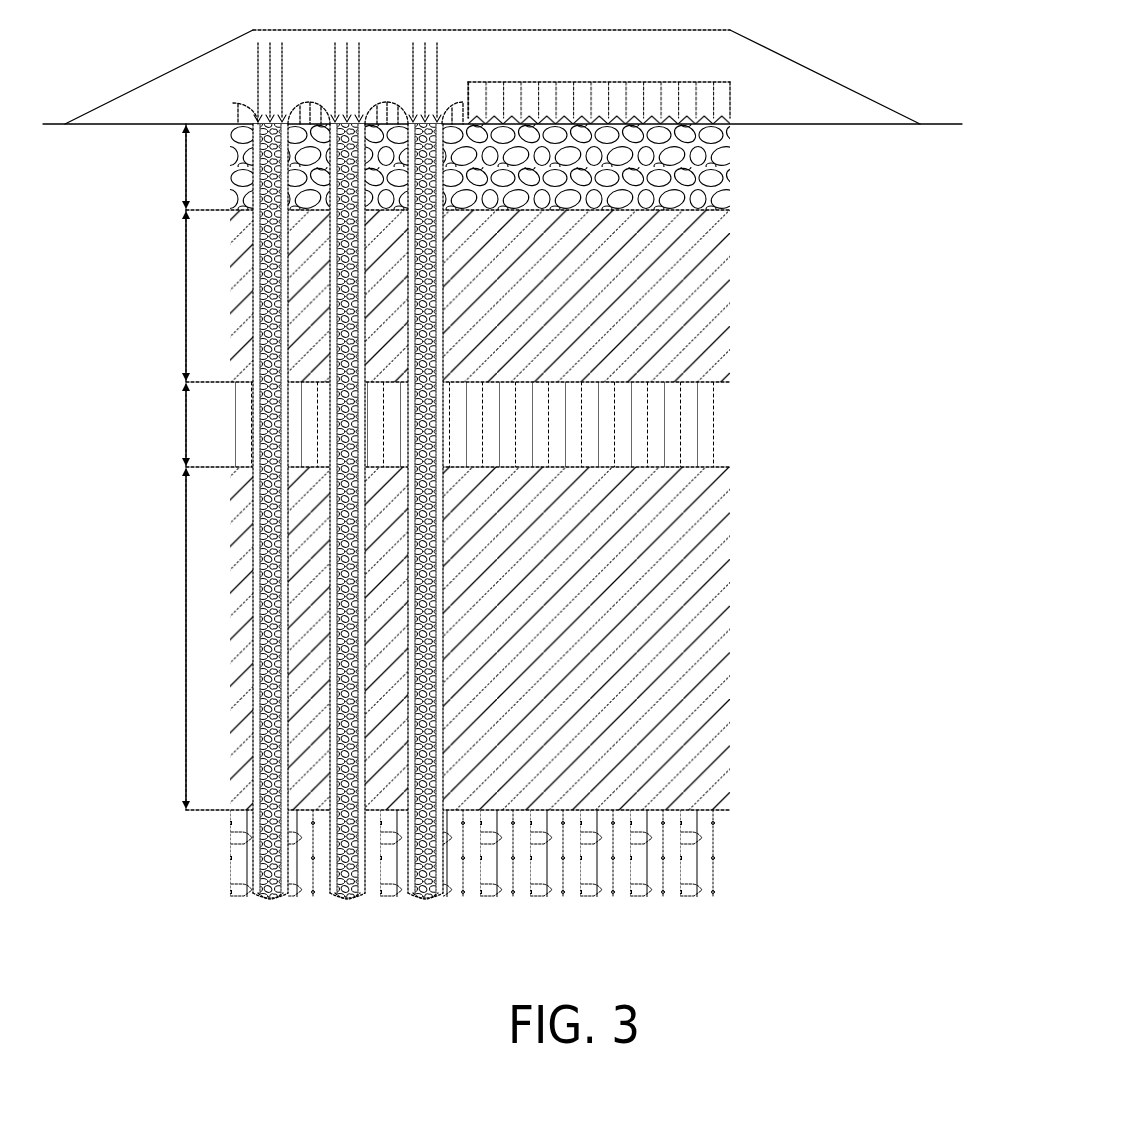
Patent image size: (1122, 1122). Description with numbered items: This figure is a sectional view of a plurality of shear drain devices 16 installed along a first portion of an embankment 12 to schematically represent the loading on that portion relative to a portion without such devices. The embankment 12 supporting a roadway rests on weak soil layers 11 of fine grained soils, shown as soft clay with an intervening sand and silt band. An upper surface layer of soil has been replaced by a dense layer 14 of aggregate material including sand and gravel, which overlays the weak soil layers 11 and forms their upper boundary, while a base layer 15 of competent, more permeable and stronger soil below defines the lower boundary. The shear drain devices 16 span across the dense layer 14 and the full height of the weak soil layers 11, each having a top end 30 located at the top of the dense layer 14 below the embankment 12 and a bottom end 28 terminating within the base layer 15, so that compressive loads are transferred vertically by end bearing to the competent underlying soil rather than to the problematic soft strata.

The weak soil layers 11 is at (740, 810).
The embankment 12 is at (172, 85).
The dense layer 14 is at (726, 170).
The base layer 15 is at (733, 860).
The shear drain devices 16 is at (408, 415).
The bottom end 28 is at (420, 898).
The top end 30 is at (437, 126).